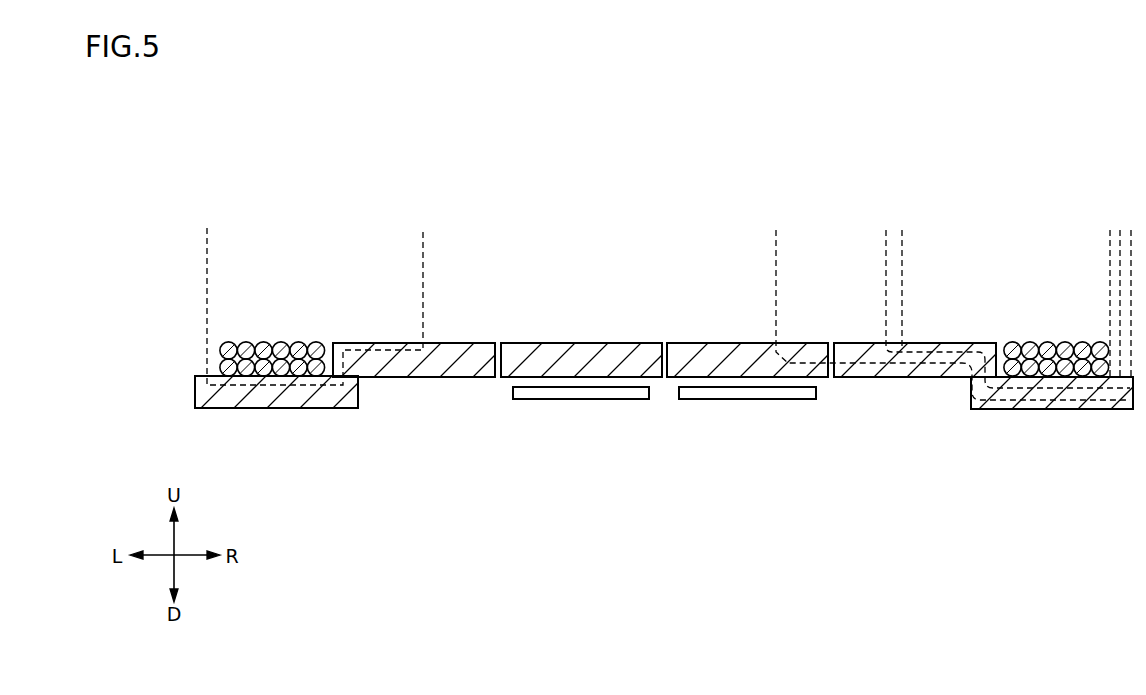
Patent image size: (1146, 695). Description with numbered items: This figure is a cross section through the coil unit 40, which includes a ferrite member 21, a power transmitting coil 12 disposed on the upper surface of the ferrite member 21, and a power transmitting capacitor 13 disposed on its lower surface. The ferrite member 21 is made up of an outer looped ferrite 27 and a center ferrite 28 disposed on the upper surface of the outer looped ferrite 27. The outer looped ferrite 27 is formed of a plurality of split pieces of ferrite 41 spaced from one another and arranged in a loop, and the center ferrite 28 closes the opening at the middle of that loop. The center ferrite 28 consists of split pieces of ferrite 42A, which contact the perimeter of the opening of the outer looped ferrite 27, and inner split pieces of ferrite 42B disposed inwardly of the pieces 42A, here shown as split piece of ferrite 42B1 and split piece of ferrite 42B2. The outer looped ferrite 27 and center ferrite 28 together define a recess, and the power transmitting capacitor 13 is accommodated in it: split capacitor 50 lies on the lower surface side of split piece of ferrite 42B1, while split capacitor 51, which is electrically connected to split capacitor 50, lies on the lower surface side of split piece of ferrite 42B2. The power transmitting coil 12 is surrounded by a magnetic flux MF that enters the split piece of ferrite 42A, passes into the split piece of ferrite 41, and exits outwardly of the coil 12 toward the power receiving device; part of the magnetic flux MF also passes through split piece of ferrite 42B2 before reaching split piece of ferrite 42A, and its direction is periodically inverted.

The coil unit 40 is at (655, 138).
The power transmitting coil 12 is at (296, 344).
The split piece of ferrite 41 is at (332, 403).
The outer looped ferrite 27 is at (1058, 429).
The split piece of ferrite (contact ferrite) 42A is at (458, 347).
The split piece of ferrite (inner ferrite) 42B is at (673, 327).
The split piece of ferrite 42B1 is at (576, 349).
The split piece of ferrite 42B2 is at (709, 349).
The split capacitor 50 is at (614, 393).
The split capacitor 51 is at (747, 412).
The power transmitting capacitor 13 is at (664, 425).
The center ferrite 28 is at (938, 407).
The ferrite member 21 is at (1029, 447).
The magnetic flux MF is at (669, 302).